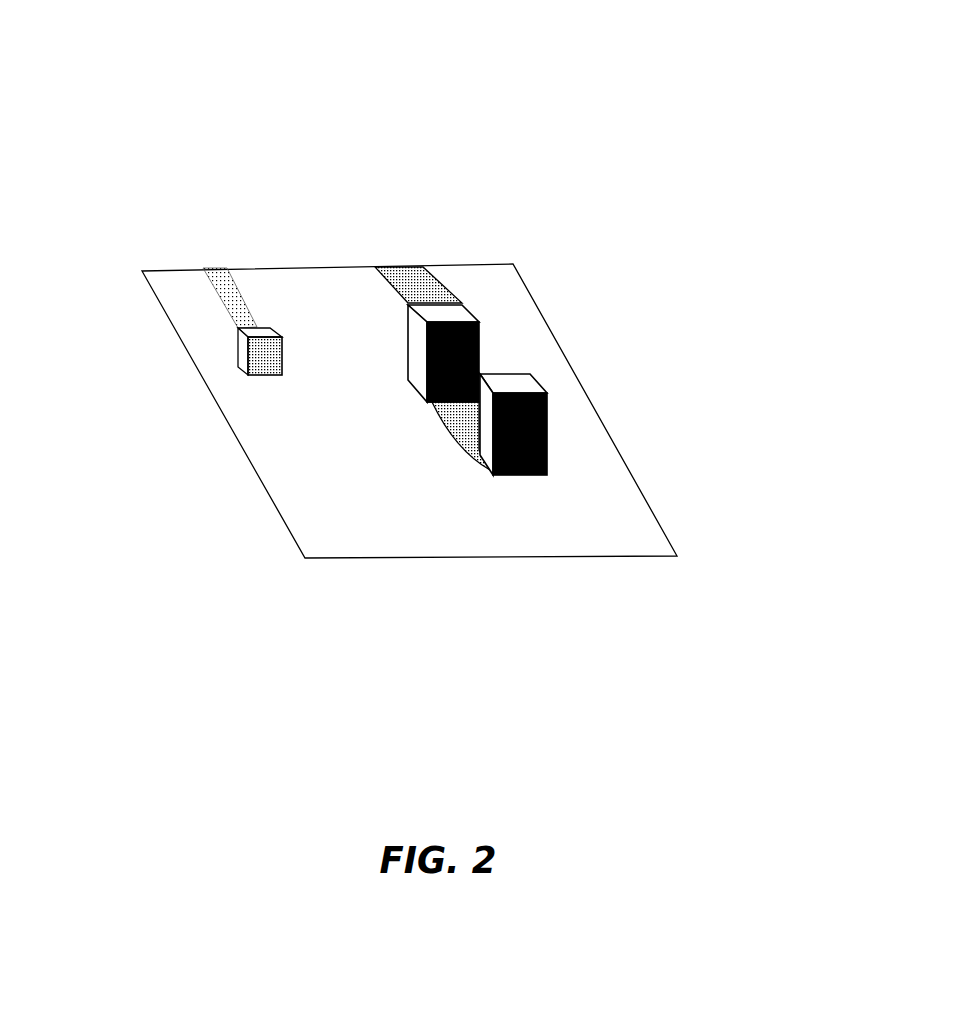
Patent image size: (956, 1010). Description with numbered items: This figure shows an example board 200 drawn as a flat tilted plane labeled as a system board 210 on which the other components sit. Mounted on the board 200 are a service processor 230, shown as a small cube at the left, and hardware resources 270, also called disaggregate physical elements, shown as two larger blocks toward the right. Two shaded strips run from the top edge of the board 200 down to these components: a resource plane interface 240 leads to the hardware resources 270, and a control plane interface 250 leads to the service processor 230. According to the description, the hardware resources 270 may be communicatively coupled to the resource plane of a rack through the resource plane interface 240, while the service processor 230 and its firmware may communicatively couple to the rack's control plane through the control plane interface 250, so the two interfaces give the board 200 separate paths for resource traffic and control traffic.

The board 200 is at (538, 49).
The system board 210 is at (568, 601).
The service processor 230 is at (238, 360).
The resource plane interface 240 is at (397, 262).
The control plane interface 250 is at (205, 268).
The hardware resources 270 is at (482, 360).